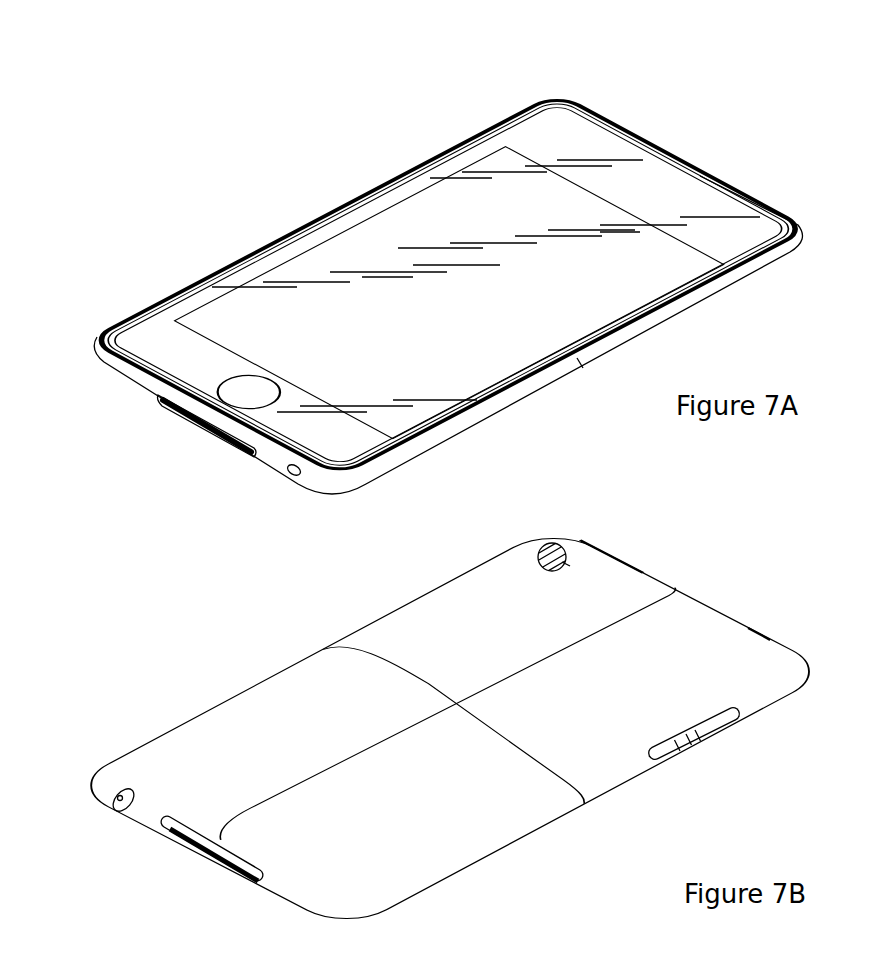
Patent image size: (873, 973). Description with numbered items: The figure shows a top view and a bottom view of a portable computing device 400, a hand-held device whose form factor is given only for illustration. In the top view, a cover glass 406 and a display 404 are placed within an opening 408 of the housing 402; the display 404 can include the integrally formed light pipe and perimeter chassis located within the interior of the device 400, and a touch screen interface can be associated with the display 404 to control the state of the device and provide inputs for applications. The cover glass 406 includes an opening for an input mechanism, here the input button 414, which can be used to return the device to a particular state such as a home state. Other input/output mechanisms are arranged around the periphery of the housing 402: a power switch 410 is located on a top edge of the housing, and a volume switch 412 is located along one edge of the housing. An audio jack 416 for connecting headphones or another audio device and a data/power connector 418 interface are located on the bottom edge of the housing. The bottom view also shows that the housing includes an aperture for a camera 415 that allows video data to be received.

In FIG. 7A, the portable computing device 400 is at (188, 100).
In FIG. 7A, the housing 402 is at (592, 362).
In FIG. 7B, the housing 402 is at (470, 570).
In FIG. 7A, the display 404 is at (592, 192).
In FIG. 7A, the cover glass 406 is at (366, 236).
In FIG. 7A, the opening 408 is at (563, 130).
In FIG. 7B, the power switch 410 is at (762, 628).
In FIG. 7B, the volume switch 412 is at (719, 720).
In FIG. 7A, the input button 414 is at (246, 382).
In FIG. 7B, the camera 415 is at (553, 548).
In FIG. 7A, the audio jack 416 is at (290, 480).
In FIG. 7B, the audio jack 416 is at (105, 816).
In FIG. 7A, the data/power connector 418 is at (190, 417).
In FIG. 7B, the data/power connector 418 is at (168, 855).